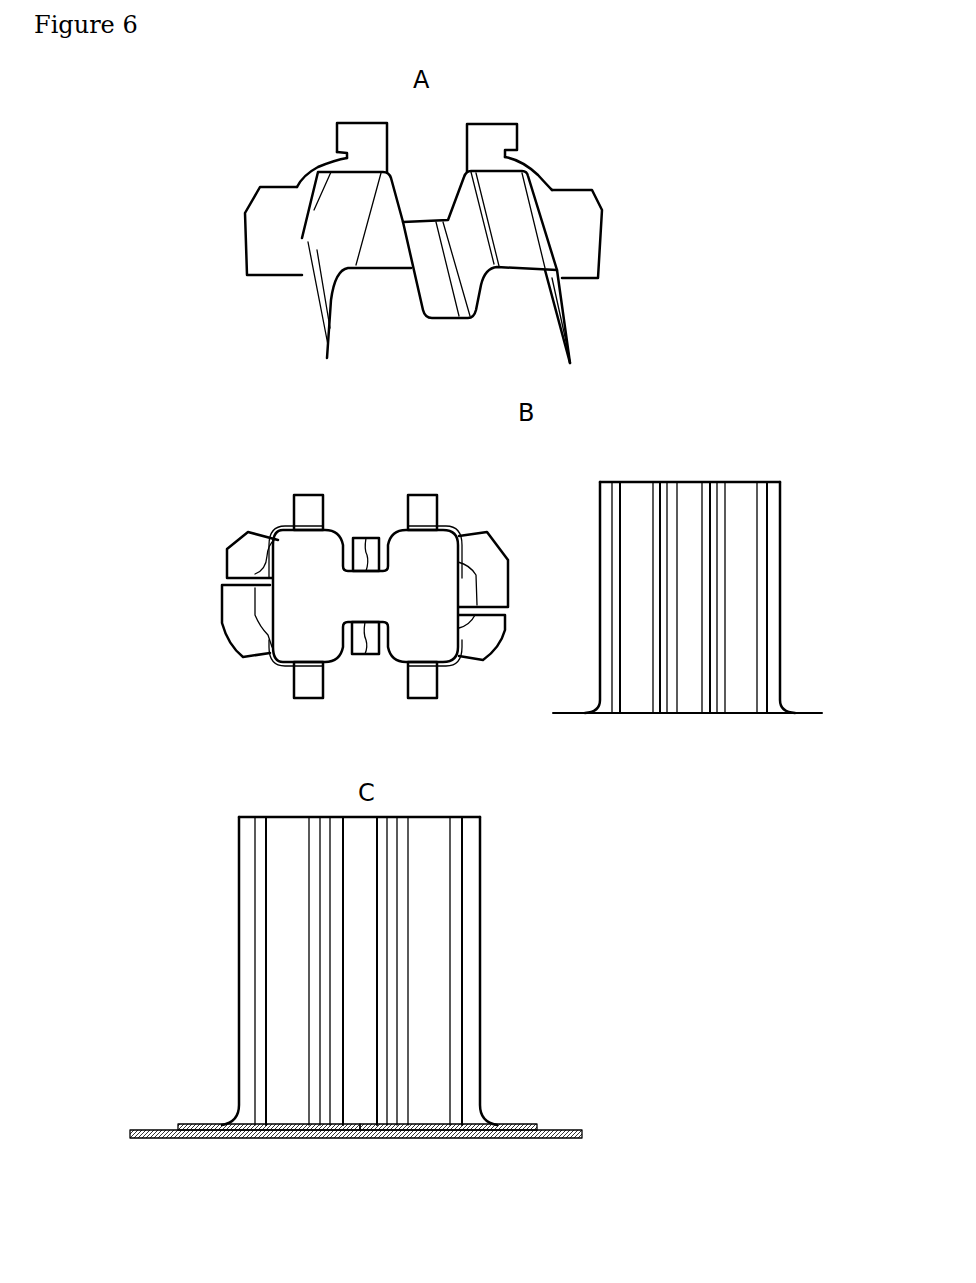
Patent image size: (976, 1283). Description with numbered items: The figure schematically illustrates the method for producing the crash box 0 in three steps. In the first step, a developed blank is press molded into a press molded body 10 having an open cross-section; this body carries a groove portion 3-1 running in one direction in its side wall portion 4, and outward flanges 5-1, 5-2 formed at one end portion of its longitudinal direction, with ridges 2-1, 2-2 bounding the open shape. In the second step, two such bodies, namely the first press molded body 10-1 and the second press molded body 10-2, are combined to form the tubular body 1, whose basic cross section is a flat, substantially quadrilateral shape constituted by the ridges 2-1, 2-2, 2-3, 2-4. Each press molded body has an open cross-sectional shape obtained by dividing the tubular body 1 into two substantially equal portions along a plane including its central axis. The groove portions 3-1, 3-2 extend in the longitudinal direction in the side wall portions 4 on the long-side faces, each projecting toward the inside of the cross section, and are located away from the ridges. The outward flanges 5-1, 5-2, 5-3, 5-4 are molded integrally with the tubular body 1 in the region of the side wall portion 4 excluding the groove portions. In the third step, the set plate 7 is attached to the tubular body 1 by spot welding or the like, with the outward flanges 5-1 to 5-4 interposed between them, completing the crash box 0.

The press molded body 10 is at (439, 117).
The tubular body 1 is at (445, 478).
The crash box 0 is at (507, 840).
The ridge 2-1 is at (328, 195).
The ridge 2-2 is at (535, 208).
The ridge 2-3 is at (443, 668).
The ridge 2-4 is at (281, 665).
The groove portion 3-1 is at (447, 302).
The groove portion 3-2 is at (364, 653).
The side wall portion 4 is at (348, 185).
The outward flange 5-1 is at (247, 222).
The outward flange 5-2 is at (604, 231).
The outward flange 5-3 is at (497, 650).
The outward flange 5-4 is at (232, 648).
The set plate 7 is at (565, 1127).
The first press molded body 10-1 is at (359, 487).
The second press molded body 10-2 is at (373, 688).